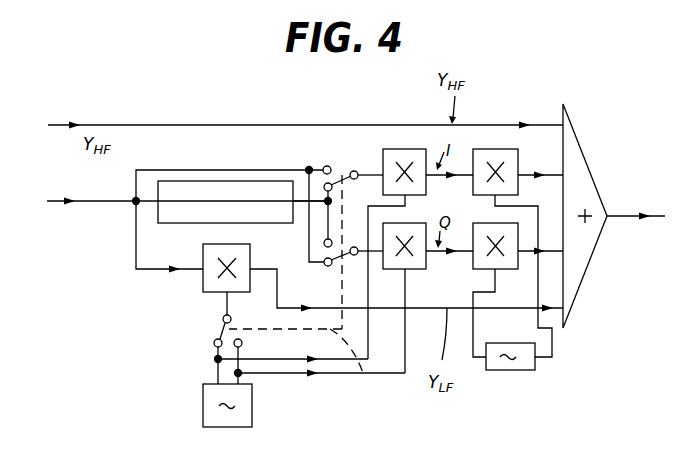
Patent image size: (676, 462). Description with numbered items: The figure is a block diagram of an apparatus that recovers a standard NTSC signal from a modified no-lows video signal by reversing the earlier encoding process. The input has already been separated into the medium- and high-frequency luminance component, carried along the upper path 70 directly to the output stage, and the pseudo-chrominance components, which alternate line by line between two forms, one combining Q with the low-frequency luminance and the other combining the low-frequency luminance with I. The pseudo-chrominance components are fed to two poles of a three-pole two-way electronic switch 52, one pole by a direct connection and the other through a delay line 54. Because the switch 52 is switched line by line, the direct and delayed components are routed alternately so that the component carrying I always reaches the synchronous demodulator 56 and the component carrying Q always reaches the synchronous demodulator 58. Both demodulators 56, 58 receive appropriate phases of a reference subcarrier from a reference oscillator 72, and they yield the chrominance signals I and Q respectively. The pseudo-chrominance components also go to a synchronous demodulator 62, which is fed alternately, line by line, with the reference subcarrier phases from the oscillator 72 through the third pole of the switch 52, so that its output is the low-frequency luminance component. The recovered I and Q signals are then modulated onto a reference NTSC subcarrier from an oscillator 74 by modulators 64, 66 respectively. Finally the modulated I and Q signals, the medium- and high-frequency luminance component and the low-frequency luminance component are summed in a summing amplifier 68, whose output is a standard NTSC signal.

The three-pole two-way electronic switch 52 is at (298, 287).
The delay line 54 is at (269, 181).
The synchronous demodulator 56 is at (403, 149).
The synchronous demodulator 58 is at (418, 270).
The synchronous demodulator 62 is at (250, 246).
The modulator 64 is at (502, 149).
The modulator 66 is at (503, 270).
The summing amplifier 68 is at (576, 178).
The high frequency luminance line 70 is at (236, 121).
The reference oscillator 72 is at (203, 392).
The oscillator 74 is at (512, 371).